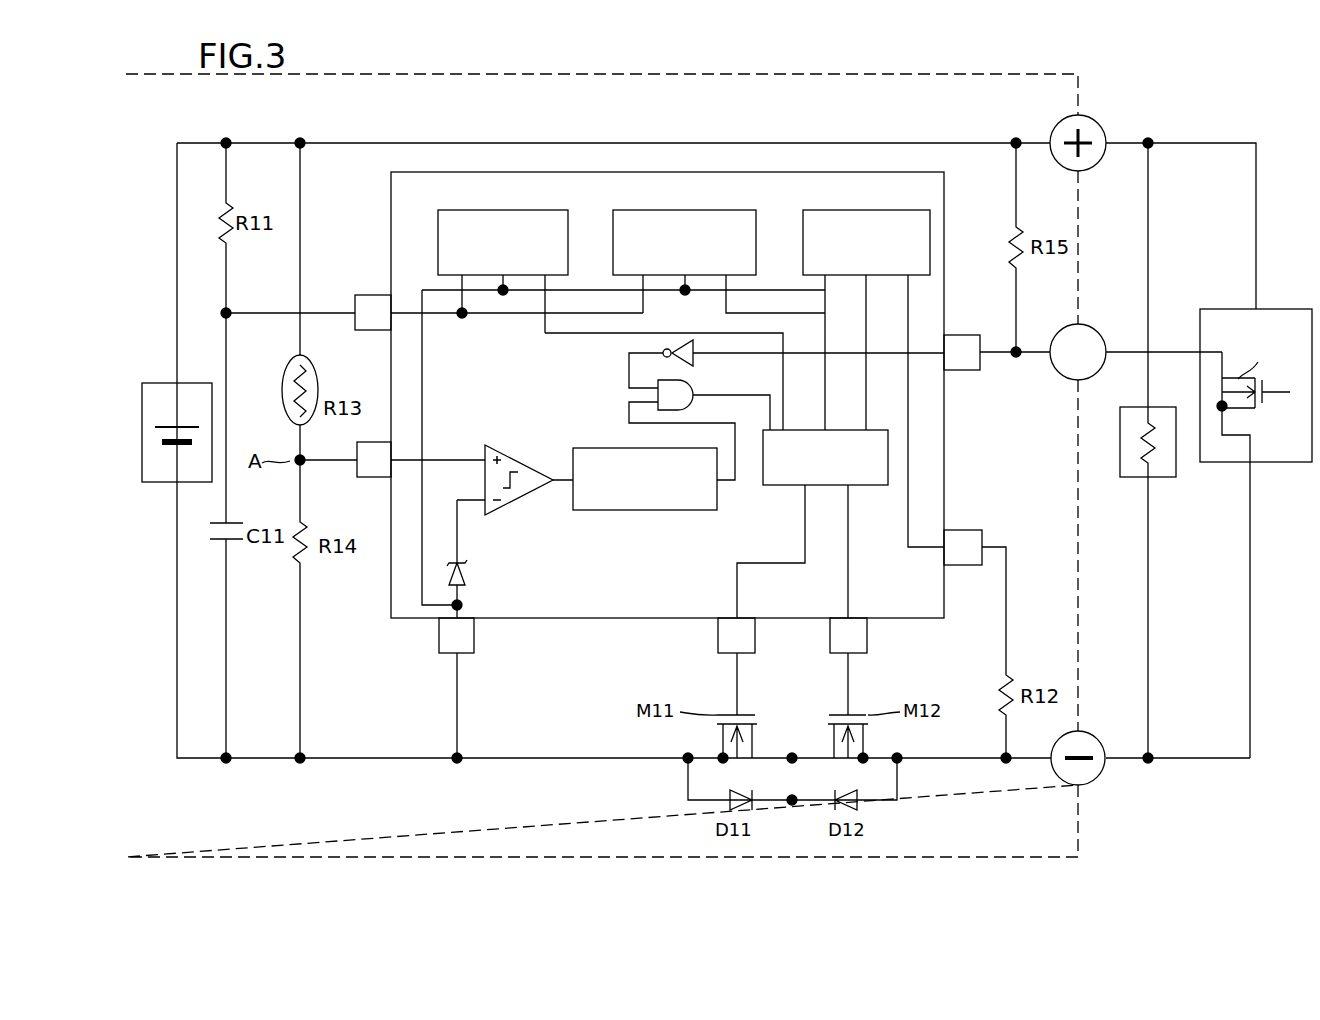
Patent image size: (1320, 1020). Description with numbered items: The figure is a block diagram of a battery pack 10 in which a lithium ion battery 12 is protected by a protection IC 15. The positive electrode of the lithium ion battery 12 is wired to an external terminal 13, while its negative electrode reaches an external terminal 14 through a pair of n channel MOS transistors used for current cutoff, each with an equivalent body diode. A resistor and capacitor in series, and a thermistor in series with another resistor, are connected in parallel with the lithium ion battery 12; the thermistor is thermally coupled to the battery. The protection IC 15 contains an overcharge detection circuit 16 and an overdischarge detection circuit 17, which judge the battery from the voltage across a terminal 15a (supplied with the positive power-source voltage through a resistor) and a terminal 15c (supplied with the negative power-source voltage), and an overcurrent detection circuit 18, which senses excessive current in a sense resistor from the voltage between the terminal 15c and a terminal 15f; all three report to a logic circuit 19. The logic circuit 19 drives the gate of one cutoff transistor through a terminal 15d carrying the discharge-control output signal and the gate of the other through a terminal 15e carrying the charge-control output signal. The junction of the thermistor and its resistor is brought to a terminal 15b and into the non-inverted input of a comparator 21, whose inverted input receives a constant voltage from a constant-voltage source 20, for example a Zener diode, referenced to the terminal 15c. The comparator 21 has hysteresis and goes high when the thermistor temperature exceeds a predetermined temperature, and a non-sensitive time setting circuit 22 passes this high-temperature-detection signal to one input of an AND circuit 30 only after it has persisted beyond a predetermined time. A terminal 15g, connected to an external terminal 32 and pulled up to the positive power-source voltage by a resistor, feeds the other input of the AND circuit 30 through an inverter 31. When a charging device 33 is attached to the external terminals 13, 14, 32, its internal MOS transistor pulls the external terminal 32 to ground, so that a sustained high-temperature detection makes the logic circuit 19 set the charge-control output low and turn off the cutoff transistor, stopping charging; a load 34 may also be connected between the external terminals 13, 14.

The battery pack 10 is at (682, 75).
The lithium ion battery 12 is at (157, 482).
The external terminal 13 is at (1097, 162).
The external terminal 14 is at (1099, 739).
The protection IC 15 is at (944, 298).
The terminal 15a is at (373, 330).
The terminal 15b is at (373, 477).
The terminal 15c is at (439, 638).
The terminal 15d is at (718, 650).
The terminal 15e is at (830, 650).
The terminal 15f is at (982, 535).
The terminal 15g is at (974, 370).
The overcharge detection circuit 16 is at (545, 210).
The overdischarge detection circuit 17 is at (728, 210).
The overcurrent detection circuit 18 is at (880, 210).
The logic circuit 19 is at (885, 485).
The constant-voltage source 20 is at (466, 586).
The comparator 21 is at (520, 449).
The non-sensitive time setting circuit 22 is at (717, 505).
The AND circuit 30 is at (693, 405).
The inverter 31 is at (690, 362).
The external terminal 32 is at (1098, 331).
The charging device 33 is at (1262, 309).
The load 34 is at (1168, 477).